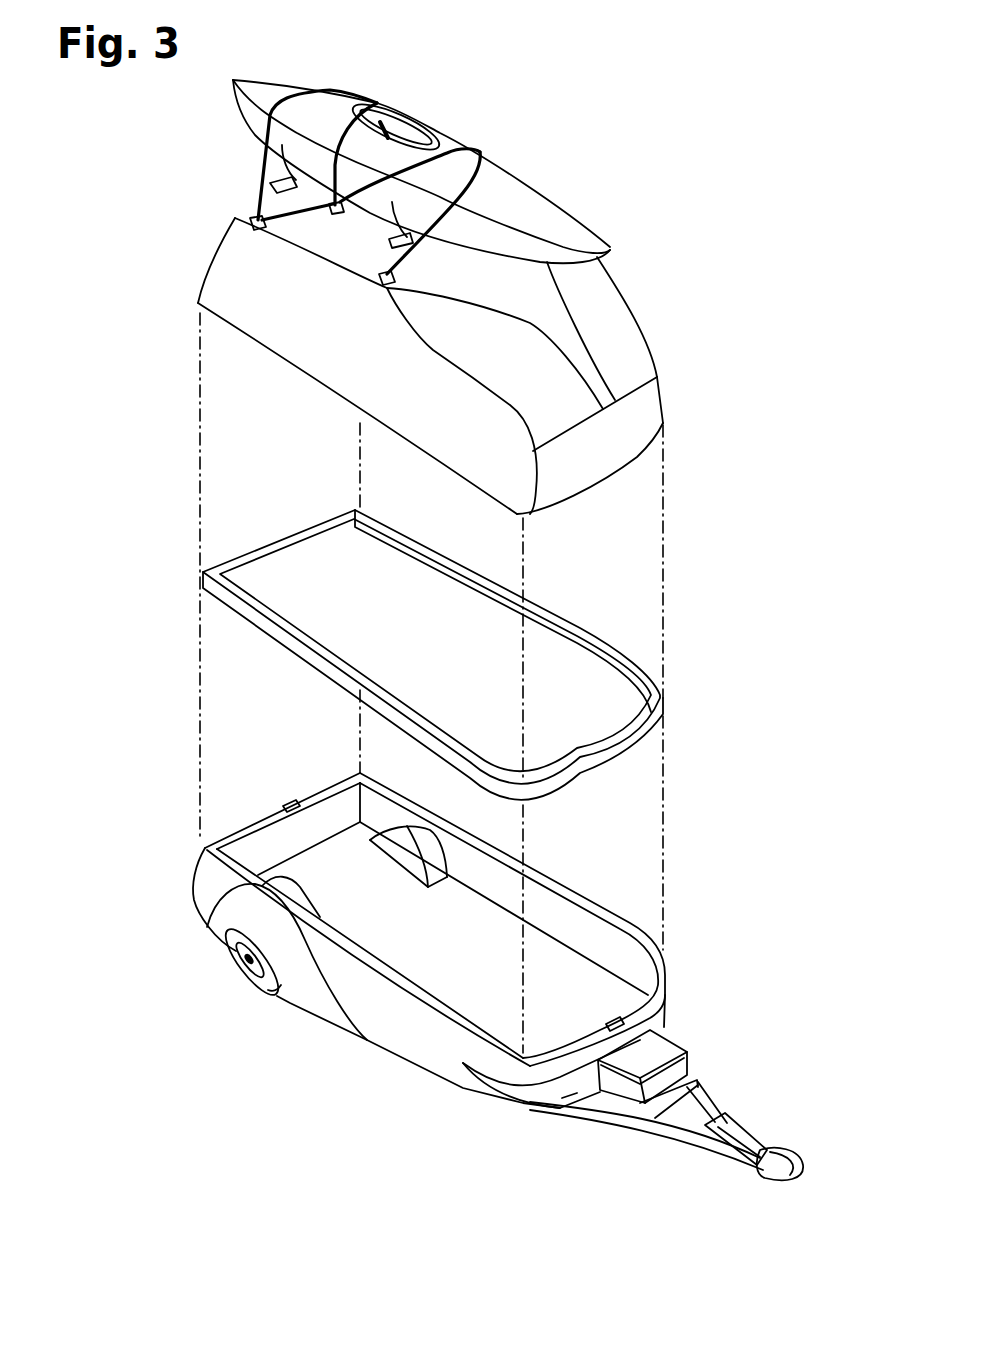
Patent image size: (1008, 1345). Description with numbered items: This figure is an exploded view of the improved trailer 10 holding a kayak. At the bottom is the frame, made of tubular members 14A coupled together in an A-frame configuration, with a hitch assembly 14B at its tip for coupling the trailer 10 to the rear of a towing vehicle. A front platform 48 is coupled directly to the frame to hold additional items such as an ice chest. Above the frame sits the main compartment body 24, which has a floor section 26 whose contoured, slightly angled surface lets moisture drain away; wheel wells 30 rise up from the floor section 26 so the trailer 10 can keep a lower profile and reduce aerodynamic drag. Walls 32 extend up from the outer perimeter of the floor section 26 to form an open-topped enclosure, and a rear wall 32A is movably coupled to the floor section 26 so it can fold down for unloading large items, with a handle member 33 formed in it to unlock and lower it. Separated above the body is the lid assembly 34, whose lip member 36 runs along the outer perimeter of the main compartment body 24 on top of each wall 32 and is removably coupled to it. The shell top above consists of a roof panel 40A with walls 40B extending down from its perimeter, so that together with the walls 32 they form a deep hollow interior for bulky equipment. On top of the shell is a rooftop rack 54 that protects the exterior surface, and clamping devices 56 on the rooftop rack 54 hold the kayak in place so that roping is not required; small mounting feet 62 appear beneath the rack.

The improved trailer 10 is at (800, 232).
The tubular members 14A is at (660, 1132).
The hitch assembly 14B is at (787, 1160).
The main compartment body 24 is at (184, 893).
The floor section 26 is at (440, 954).
The wheel wells 30 is at (372, 840).
The walls 32 is at (403, 1047).
The rear wall 32A is at (318, 798).
The handle member 33 is at (283, 808).
The lid assembly 34 is at (722, 494).
The lip member 36 is at (665, 709).
The roof panel 40A is at (633, 328).
The walls 40B is at (212, 287).
The front platform 48 is at (690, 1073).
The rooftop rack 54 is at (257, 165).
The clamping devices 56 is at (267, 153).
The rack mounting base 62 is at (245, 218).